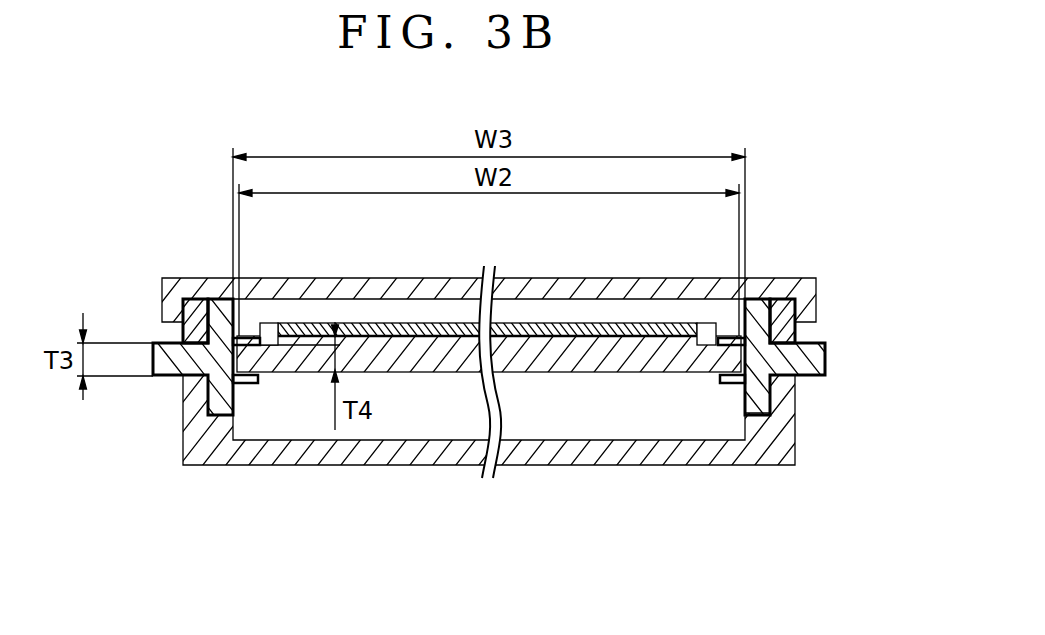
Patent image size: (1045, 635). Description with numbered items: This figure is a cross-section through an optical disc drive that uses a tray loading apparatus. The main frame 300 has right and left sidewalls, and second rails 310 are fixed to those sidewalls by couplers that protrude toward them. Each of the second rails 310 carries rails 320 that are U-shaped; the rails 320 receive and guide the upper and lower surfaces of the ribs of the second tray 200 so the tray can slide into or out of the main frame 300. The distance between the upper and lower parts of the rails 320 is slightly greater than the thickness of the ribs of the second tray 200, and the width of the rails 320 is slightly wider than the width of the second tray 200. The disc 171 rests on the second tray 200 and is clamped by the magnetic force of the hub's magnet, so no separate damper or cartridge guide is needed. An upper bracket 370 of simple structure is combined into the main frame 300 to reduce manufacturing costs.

The disc 171 is at (619, 325).
The second tray 200 is at (593, 388).
The main frame 300 is at (742, 452).
The second rails 310 is at (222, 308).
The rails 320 is at (250, 384).
The upper bracket 370 is at (395, 290).